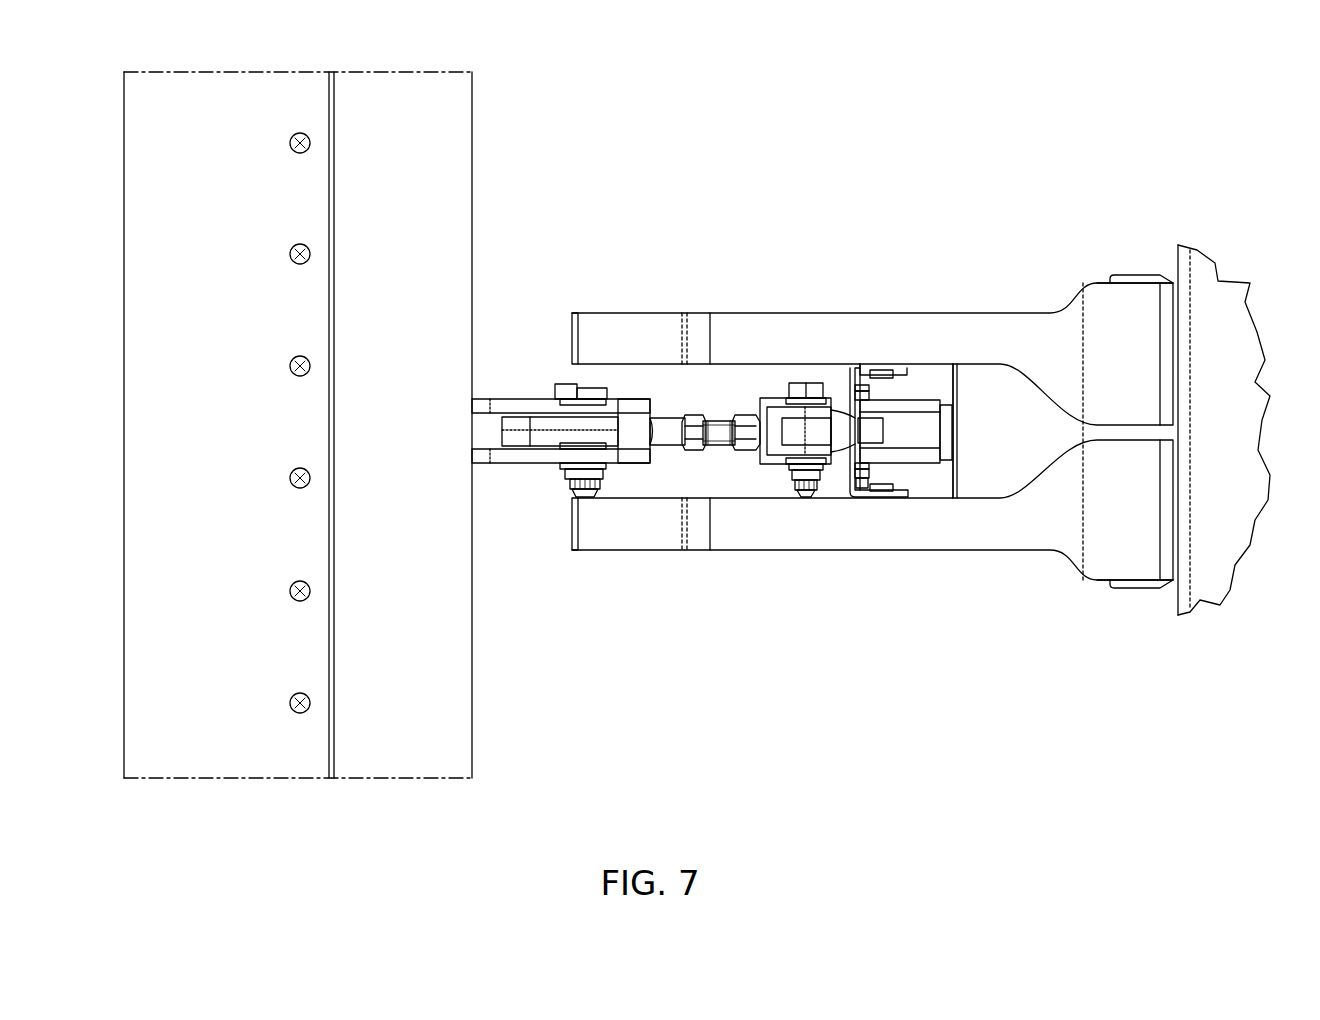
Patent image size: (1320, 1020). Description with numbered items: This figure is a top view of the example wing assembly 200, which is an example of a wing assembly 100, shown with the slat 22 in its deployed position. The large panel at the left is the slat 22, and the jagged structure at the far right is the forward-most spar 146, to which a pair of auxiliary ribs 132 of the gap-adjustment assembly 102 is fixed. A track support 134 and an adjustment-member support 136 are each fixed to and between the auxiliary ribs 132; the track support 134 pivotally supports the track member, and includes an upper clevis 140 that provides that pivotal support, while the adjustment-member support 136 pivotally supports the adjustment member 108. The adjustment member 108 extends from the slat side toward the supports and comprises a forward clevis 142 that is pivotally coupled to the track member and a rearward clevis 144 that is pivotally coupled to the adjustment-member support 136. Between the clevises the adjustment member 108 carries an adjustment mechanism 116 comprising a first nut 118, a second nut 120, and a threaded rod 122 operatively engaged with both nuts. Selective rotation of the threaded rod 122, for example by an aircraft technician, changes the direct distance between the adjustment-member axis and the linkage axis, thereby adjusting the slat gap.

The slat 22 is at (472, 107).
The wing assembly 100 is at (894, 360).
The wing assembly 200 is at (1195, 379).
The gap-adjustment assembly 102 is at (894, 429).
The adjustment member 108 is at (731, 340).
The adjustment mechanism 116 is at (740, 382).
The first nut 118 is at (751, 448).
The second nut 120 is at (697, 446).
The threaded rod 122 is at (722, 443).
The auxiliary ribs 132 is at (1010, 307).
The track support 134 is at (968, 464).
The adjustment-member support 136 is at (842, 375).
The upper clevis 140 is at (928, 465).
The forward clevis 142 is at (627, 398).
The rearward clevis 144 is at (777, 398).
The forward-most spar 146 is at (1171, 603).